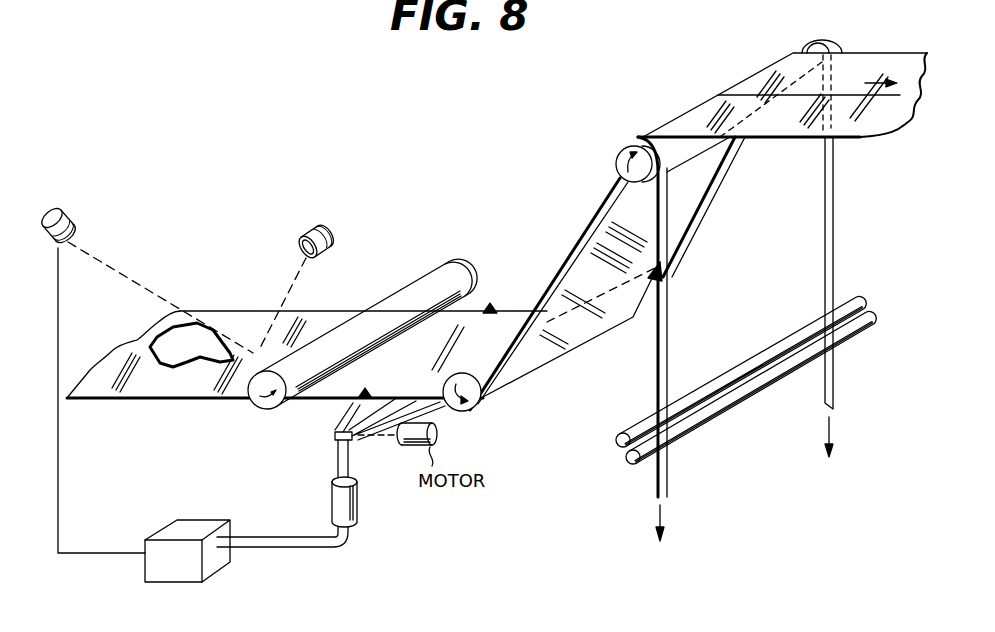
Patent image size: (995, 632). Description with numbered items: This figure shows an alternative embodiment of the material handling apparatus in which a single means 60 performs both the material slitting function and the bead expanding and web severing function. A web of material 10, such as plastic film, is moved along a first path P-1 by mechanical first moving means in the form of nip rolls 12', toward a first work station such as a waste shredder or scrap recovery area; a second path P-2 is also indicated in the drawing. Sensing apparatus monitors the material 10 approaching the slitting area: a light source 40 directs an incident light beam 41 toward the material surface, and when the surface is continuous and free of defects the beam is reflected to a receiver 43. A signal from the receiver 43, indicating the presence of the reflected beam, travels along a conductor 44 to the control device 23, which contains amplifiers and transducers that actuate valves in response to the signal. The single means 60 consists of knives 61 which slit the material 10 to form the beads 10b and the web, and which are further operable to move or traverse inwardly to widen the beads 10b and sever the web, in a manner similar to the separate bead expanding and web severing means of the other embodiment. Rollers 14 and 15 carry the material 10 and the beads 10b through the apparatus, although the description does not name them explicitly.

The web of material 10 is at (160, 400).
The beads 10b is at (574, 247).
The nip rolls 12' is at (768, 373).
The roller 14 is at (468, 410).
The roller 15 is at (630, 148).
The control device 23 is at (187, 578).
The light source 40 is at (326, 234).
The incident light beam 41 is at (293, 286).
The receiver 43 is at (72, 218).
The conductor 44 is at (58, 318).
The single means 60 is at (326, 505).
The knives 61 is at (366, 390).
The first path P-1 is at (836, 368).
The sheet path P-2 is at (866, 64).